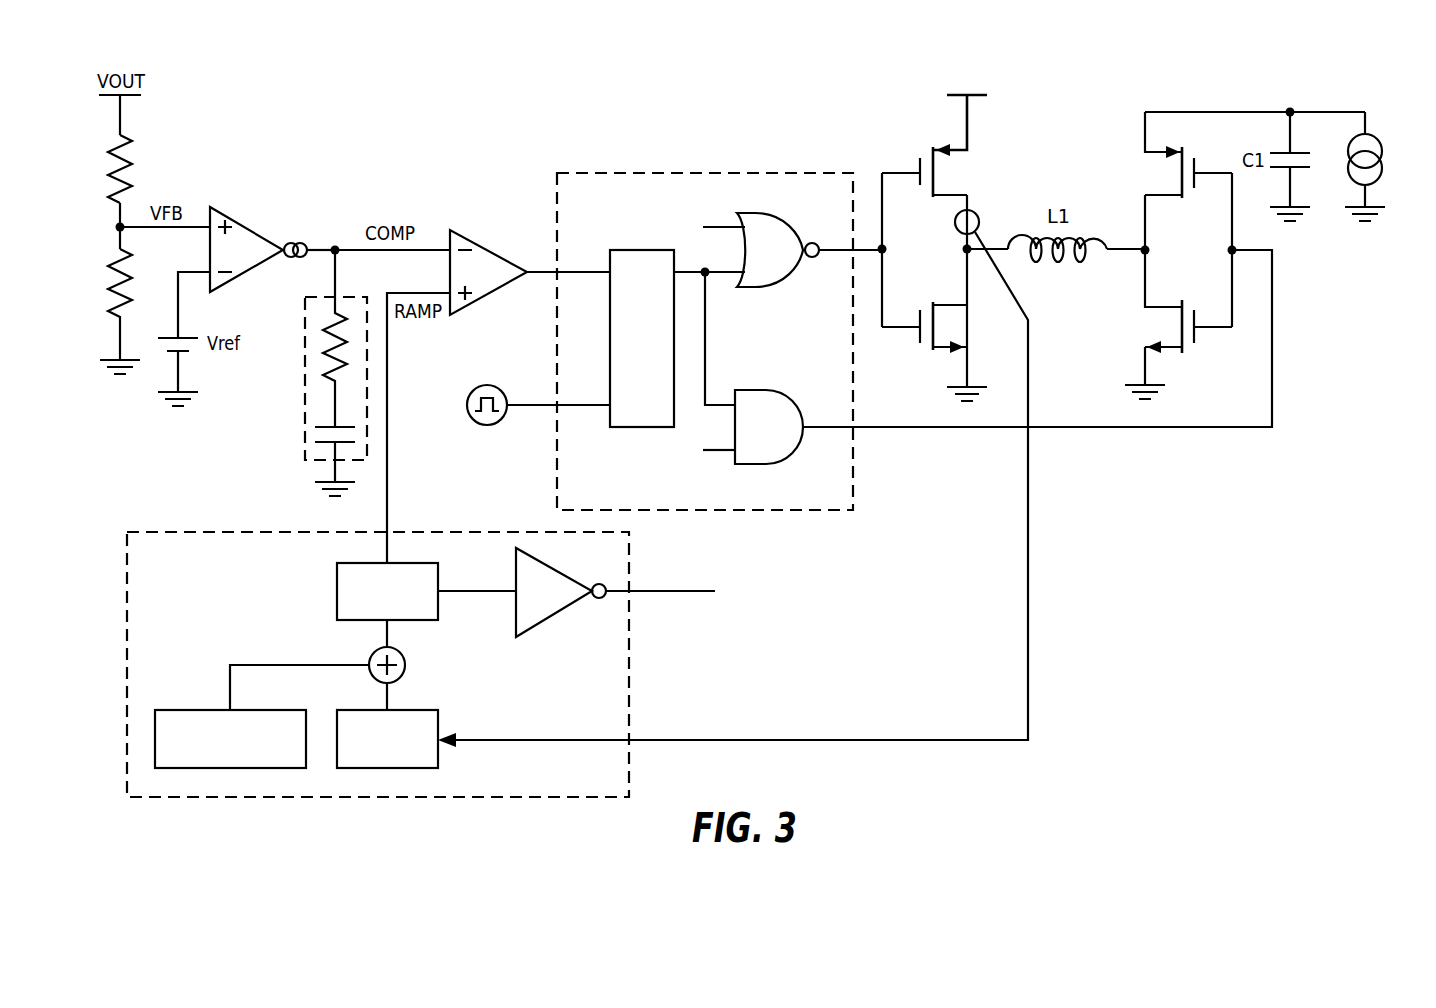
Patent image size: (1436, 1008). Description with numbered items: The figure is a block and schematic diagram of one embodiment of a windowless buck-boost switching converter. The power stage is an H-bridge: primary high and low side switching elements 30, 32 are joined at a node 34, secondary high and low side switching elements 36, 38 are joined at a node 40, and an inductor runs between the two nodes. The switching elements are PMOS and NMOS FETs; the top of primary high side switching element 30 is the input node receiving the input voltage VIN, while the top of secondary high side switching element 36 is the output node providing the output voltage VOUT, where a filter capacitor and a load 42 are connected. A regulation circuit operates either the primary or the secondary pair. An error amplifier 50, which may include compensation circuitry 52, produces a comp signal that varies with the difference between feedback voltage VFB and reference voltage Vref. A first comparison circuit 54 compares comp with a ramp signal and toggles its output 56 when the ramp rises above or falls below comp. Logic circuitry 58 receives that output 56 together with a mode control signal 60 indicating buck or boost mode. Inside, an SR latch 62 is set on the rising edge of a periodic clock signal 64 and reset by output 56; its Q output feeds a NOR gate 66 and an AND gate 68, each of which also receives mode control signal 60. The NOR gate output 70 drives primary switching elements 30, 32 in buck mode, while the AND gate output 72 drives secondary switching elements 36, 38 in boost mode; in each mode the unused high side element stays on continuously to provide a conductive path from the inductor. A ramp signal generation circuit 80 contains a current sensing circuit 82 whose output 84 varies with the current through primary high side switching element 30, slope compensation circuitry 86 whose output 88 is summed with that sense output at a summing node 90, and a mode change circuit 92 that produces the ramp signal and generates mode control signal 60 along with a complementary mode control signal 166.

The primary high side switching element 30 is at (918, 150).
The primary low side switching element 32 is at (918, 349).
The node 34 is at (962, 249).
The secondary high side switching element 36 is at (1200, 150).
The secondary low side switching element 38 is at (1200, 351).
The node 40 is at (1152, 251).
The load 42 is at (1381, 140).
The error amplifier 50 is at (249, 228).
The compensation circuitry 52 is at (305, 378).
The first comparison circuit 54 is at (490, 295).
The output of comparison circuit 56 is at (536, 270).
The logic circuitry 58 is at (697, 173).
The mode control signal 60 is at (722, 224).
The SR latch 62 is at (610, 340).
The periodic clock signal 64 is at (486, 385).
The NOR gate 66 is at (786, 281).
The AND gate 68 is at (783, 458).
The NOR gate output 70 is at (834, 247).
The AND gate output 72 is at (825, 425).
The ramp signal generation circuit 80 is at (296, 532).
The current sensing circuit 82 is at (367, 710).
The current sensing circuit output 84 is at (390, 698).
The slope compensation circuitry 86 is at (200, 710).
The slope compensation output 88 is at (300, 665).
The summing node 90 is at (406, 665).
The mode change circuit 92 is at (337, 592).
The complementary mode control signal 166 is at (476, 595).